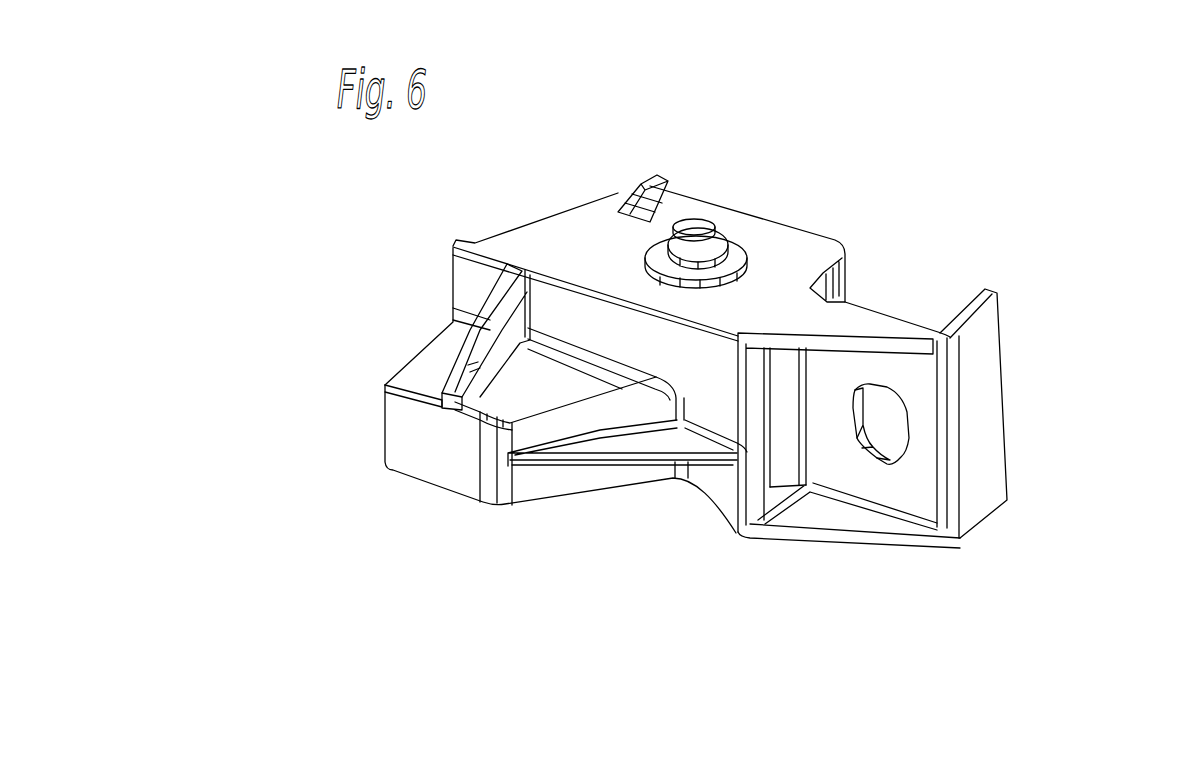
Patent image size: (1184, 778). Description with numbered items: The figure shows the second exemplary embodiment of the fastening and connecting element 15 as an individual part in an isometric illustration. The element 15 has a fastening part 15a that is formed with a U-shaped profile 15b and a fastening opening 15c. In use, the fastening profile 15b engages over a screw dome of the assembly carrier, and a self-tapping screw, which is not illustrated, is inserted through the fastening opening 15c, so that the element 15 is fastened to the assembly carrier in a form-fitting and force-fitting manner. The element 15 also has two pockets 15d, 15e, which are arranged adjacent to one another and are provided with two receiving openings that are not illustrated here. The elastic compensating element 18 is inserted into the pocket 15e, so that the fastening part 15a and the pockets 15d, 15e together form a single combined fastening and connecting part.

The fastening and connecting element 15 is at (395, 307).
The fastening part 15a is at (827, 533).
The U-shaped profile 15b is at (905, 300).
The fastening opening 15c is at (885, 433).
The pocket 15d is at (413, 460).
The pocket 15e is at (787, 243).
The elastic compensating element 18 is at (698, 230).